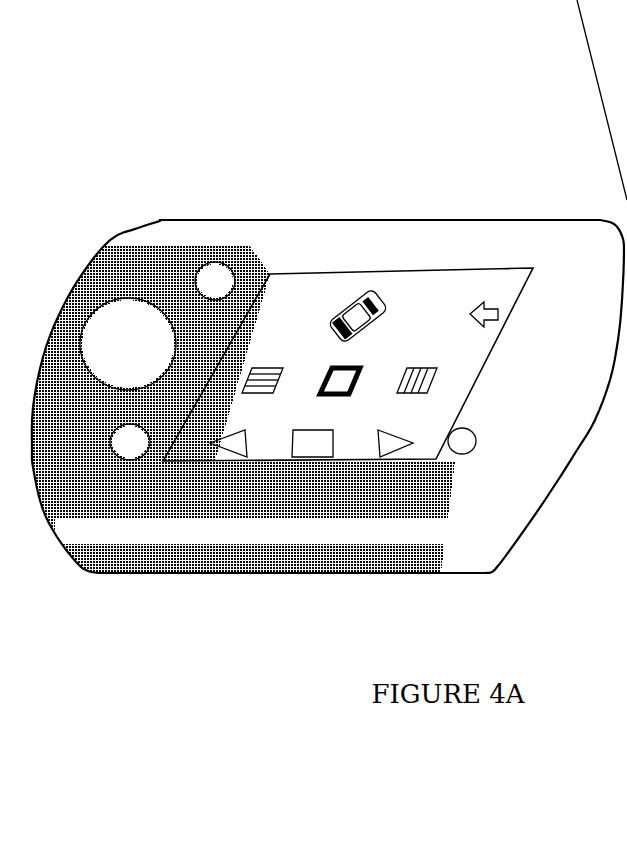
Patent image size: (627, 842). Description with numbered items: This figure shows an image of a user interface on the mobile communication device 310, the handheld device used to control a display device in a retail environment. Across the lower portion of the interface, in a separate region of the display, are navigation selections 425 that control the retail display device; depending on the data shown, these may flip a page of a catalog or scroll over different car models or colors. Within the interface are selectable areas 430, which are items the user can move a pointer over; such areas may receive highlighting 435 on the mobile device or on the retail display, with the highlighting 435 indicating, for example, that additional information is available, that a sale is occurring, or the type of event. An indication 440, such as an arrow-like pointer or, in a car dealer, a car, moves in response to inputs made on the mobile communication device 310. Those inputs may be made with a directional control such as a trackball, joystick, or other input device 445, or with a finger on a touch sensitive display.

The mobile communication device 310 is at (105, 528).
The navigation selections 425 is at (392, 440).
The selectable areas 430 is at (268, 367).
The highlighting 435 is at (415, 369).
The indication 440 is at (534, 268).
The input device 445 is at (130, 337).